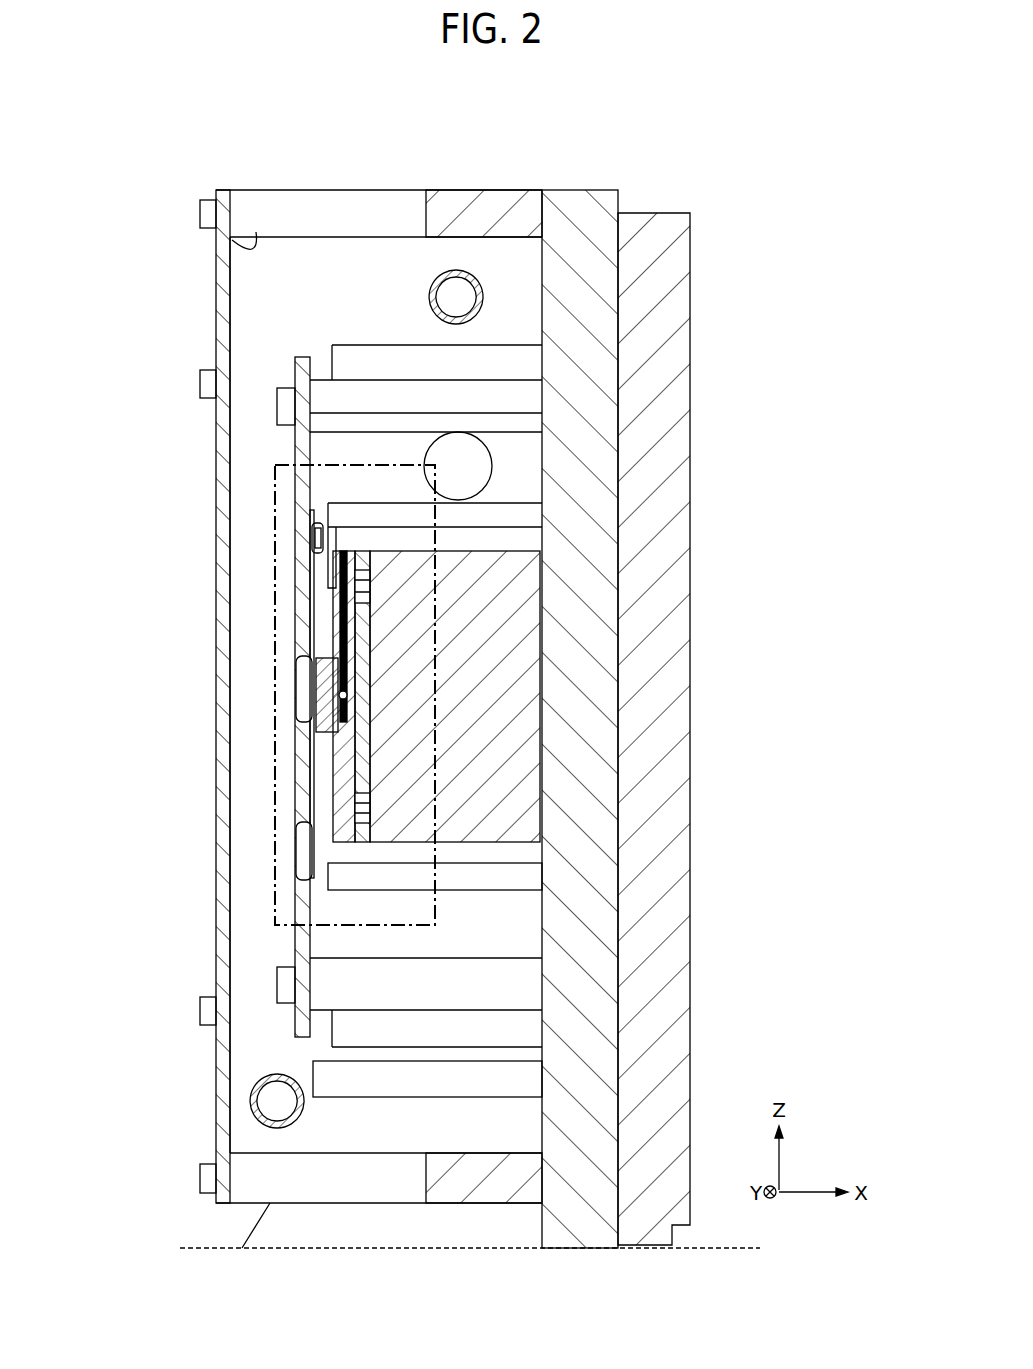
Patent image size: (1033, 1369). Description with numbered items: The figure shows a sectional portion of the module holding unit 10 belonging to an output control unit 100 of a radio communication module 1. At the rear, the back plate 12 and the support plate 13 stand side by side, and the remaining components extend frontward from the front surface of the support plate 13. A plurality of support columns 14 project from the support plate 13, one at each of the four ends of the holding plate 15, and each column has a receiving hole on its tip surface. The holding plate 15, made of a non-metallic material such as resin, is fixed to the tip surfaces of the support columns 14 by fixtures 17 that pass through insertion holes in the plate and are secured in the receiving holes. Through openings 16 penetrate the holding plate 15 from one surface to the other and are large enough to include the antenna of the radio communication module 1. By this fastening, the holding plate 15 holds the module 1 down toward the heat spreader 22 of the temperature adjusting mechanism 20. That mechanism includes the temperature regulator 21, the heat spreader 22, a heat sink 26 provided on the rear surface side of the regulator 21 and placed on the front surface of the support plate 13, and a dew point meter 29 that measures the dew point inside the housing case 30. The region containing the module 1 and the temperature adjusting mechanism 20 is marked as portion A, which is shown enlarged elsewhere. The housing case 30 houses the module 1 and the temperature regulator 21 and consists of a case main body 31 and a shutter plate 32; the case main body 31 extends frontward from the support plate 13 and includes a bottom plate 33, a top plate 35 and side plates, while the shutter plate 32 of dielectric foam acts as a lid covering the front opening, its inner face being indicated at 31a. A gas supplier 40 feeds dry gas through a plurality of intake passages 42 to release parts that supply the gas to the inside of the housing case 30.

The output control unit 100 is at (662, 168).
The module holding unit 10 is at (712, 240).
The back plate 12 is at (632, 540).
The support plate 13 is at (578, 630).
The support column 14 is at (510, 400).
The holding plate 15 is at (297, 878).
The through opening 16 is at (312, 560).
The fixture 17 is at (277, 412).
The temperature adjusting mechanism 20 is at (546, 665).
The temperature regulator 21 is at (338, 640).
The heat spreader 22 is at (340, 760).
The heat sink 26 is at (510, 695).
The dew point meter 29 is at (455, 480).
The housing case 30 is at (80, 262).
The case main body 31 is at (216, 272).
The shutter plate 32 is at (216, 318).
The inner surface 31a is at (216, 340).
The bottom plate 33 is at (397, 1180).
The top plate 35 is at (398, 208).
The gas supplier 40 is at (254, 1087).
The intake passage 42 is at (480, 292).
The radio communication module 1 is at (300, 785).
The portion A is at (275, 515).